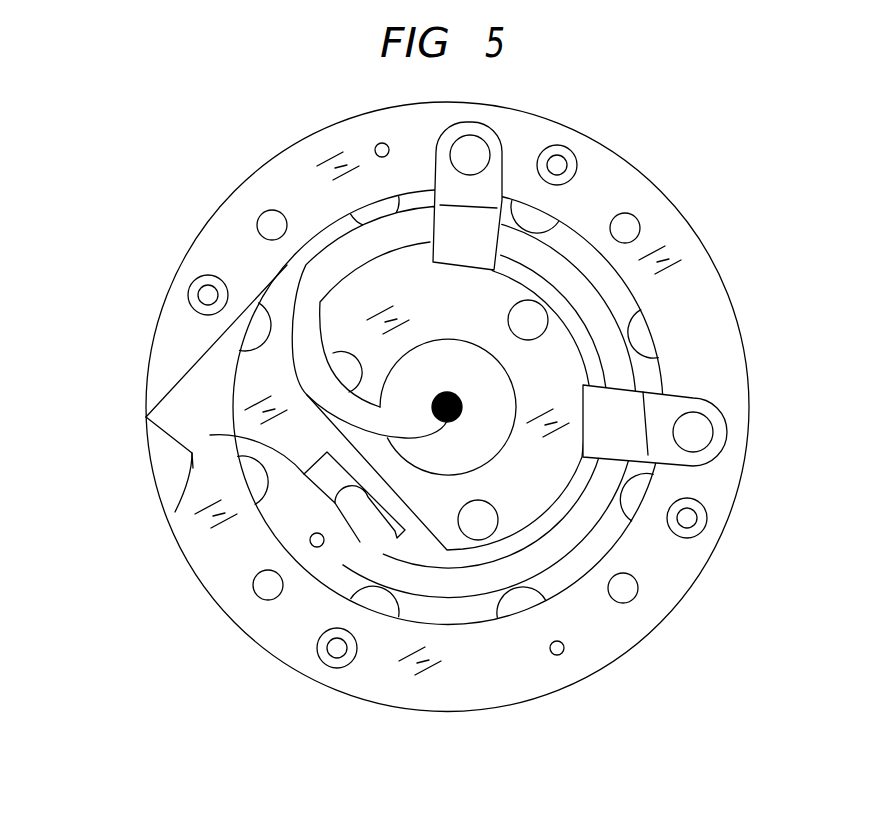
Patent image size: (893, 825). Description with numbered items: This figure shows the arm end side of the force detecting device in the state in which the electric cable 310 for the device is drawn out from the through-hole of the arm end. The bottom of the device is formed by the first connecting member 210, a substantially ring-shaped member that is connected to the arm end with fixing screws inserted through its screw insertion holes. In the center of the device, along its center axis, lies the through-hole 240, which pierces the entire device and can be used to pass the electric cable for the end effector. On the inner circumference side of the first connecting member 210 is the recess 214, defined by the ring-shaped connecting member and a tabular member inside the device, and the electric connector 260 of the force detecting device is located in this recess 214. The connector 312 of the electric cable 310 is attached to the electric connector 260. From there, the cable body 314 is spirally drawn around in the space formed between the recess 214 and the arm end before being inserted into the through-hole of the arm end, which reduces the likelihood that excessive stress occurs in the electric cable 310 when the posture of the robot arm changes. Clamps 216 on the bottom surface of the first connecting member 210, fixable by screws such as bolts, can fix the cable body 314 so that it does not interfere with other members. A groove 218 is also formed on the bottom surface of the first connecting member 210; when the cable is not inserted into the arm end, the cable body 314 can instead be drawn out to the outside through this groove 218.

The first connecting member 210 is at (673, 235).
The recess 214 is at (622, 300).
The clamps 216 is at (668, 417).
The groove 218 is at (193, 402).
The through-hole 240 is at (462, 370).
The electric connector 260 is at (210, 435).
The electric cable 310 is at (226, 570).
The connector 312 is at (323, 477).
The cable body 314 is at (345, 260).